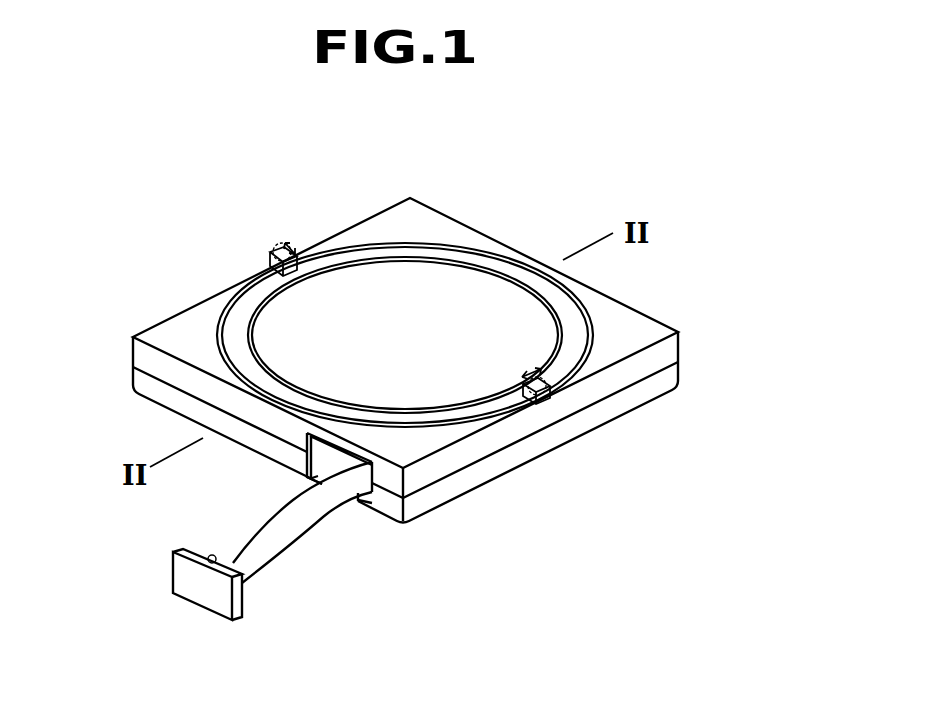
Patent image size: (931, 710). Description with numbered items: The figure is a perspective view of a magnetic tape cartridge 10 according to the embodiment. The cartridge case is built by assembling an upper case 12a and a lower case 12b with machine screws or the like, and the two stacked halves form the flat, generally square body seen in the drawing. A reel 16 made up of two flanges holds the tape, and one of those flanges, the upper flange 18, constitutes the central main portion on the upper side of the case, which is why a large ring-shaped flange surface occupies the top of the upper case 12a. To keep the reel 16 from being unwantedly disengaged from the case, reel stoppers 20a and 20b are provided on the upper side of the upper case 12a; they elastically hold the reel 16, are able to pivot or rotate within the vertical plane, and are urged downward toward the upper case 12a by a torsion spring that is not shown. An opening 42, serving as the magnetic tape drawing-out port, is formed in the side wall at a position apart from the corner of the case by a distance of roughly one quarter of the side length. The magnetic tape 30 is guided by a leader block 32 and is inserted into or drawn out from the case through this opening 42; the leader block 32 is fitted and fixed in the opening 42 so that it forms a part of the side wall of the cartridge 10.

The magnetic tape cartridge 10 is at (313, 197).
The upper case 12a is at (640, 327).
The lower case 12b is at (490, 463).
The reel 16 is at (405, 335).
The upper flange 18 is at (410, 288).
The reel stopper 20a is at (270, 252).
The reel stopper 20b is at (549, 399).
The magnetic tape 30 is at (290, 533).
The leader block 32 is at (173, 585).
The opening 42 is at (314, 479).